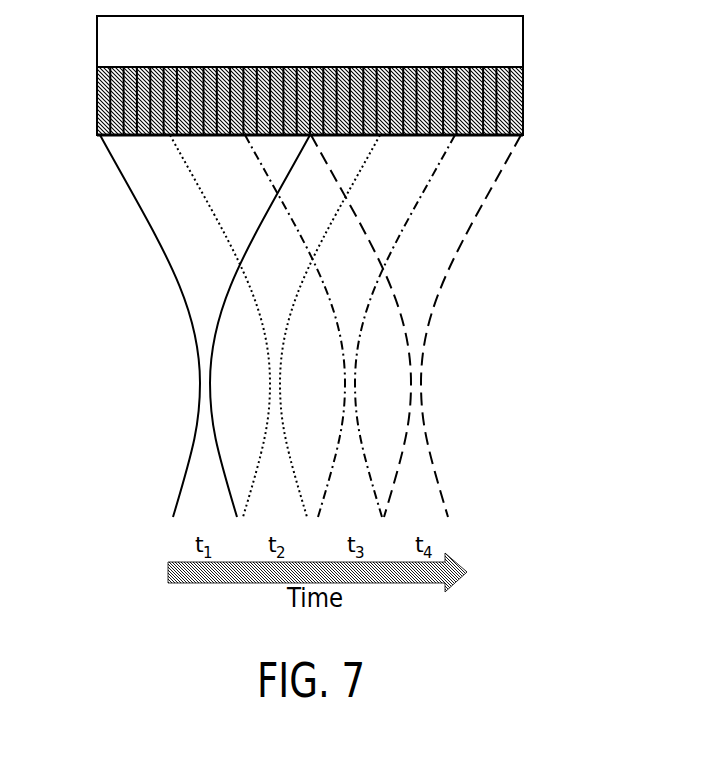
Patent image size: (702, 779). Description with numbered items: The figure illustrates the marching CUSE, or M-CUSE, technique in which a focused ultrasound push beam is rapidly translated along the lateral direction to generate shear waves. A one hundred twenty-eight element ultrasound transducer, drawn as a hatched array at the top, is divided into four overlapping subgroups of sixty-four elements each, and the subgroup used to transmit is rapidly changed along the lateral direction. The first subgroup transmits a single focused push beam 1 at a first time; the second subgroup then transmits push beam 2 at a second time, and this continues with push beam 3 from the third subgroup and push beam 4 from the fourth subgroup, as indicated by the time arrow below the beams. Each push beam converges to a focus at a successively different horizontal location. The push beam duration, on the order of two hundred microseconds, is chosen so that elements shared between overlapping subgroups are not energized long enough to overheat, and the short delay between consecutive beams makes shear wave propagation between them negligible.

The first subgroup push beam 1 is at (205, 326).
The second subgroup push beam 2 is at (275, 326).
The third subgroup push beam 3 is at (350, 326).
The fourth subgroup push beam 4 is at (416, 326).